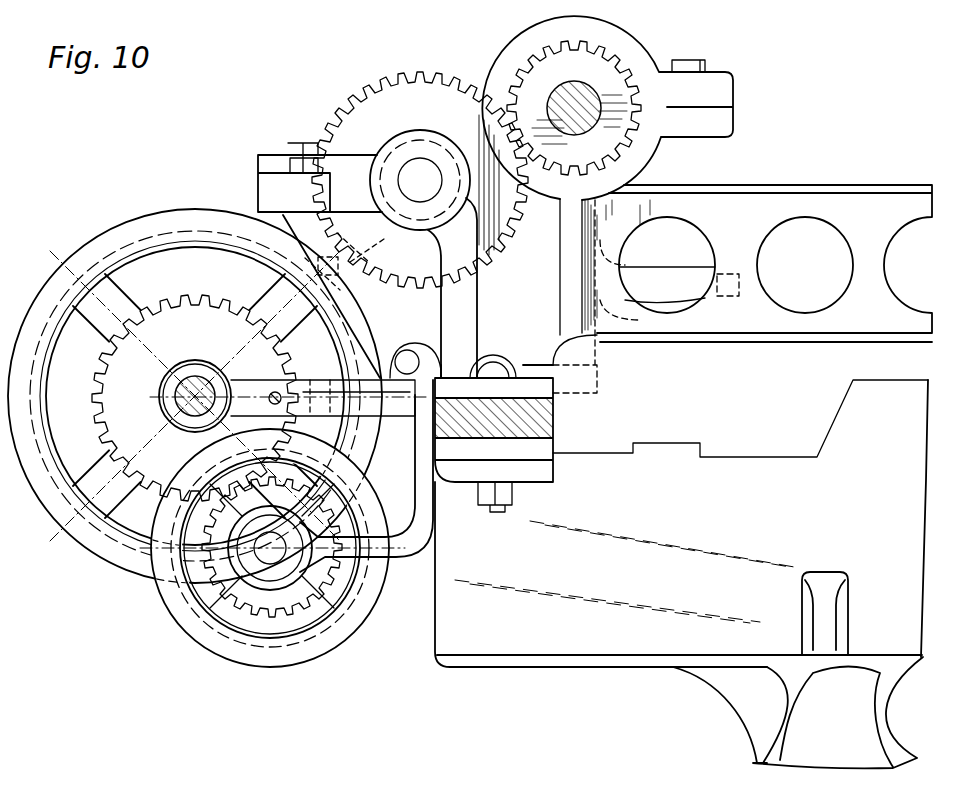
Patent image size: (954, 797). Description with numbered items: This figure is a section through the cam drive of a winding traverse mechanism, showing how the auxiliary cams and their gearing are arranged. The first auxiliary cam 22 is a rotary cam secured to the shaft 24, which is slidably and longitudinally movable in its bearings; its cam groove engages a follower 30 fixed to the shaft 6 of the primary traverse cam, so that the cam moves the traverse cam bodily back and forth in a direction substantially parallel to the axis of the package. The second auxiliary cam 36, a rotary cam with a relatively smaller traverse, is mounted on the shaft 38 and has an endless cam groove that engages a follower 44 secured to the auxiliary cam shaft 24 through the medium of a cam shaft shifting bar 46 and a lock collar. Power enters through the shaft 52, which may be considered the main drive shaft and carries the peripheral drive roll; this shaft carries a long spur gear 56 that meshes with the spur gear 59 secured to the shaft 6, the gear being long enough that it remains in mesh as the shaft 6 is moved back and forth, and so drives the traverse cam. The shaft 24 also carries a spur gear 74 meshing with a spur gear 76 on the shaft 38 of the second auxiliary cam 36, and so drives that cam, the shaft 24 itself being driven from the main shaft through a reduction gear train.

The first auxiliary cam 22 is at (68, 272).
The spur gear 74 is at (216, 285).
The cam shaft shifting bar 46 is at (180, 366).
The shaft 24 is at (182, 398).
The follower 44 is at (286, 450).
The spur gear 59 is at (416, 181).
The shaft 6 is at (420, 180).
The follower 30 is at (426, 306).
The long spur gear 56 is at (584, 53).
The shaft 52 is at (553, 97).
The shaft 38 is at (268, 562).
The spur gear 76 is at (292, 618).
The second auxiliary cam 36 is at (340, 640).